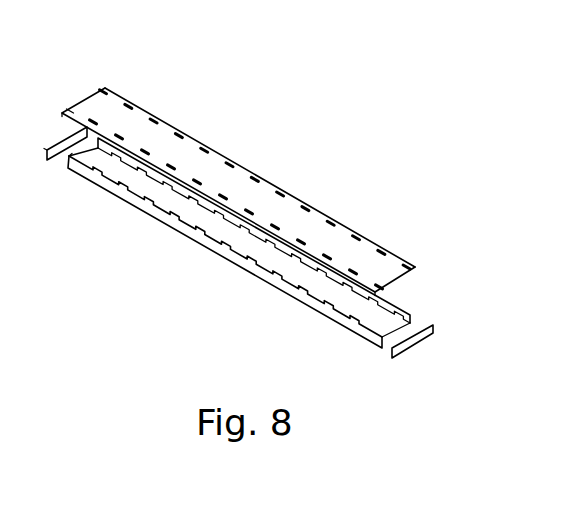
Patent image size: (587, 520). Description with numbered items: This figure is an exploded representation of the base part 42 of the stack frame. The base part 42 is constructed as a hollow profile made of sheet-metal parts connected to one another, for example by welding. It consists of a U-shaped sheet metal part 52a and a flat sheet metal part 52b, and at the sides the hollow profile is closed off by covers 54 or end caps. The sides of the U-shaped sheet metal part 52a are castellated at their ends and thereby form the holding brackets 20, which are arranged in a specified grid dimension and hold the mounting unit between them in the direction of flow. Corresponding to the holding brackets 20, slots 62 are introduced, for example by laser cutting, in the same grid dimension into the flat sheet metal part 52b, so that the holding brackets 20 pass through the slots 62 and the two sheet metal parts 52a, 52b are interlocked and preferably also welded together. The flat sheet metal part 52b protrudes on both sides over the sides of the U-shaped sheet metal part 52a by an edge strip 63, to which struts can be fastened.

The holding brackets 20 is at (170, 215).
The base part 42 is at (212, 122).
The U-shaped sheet metal part 52a is at (238, 262).
The flat sheet metal part 52b is at (316, 228).
The covers 54 is at (62, 145).
The slots 62 is at (152, 122).
The edge strip 63 is at (278, 190).